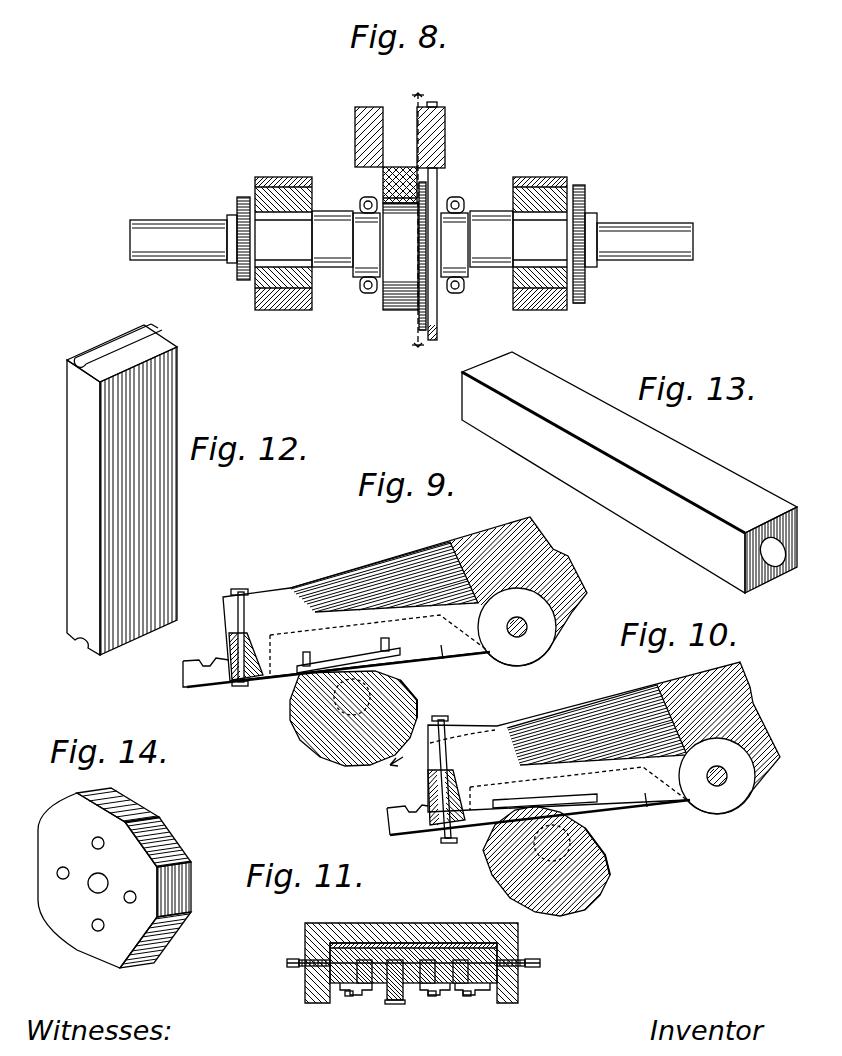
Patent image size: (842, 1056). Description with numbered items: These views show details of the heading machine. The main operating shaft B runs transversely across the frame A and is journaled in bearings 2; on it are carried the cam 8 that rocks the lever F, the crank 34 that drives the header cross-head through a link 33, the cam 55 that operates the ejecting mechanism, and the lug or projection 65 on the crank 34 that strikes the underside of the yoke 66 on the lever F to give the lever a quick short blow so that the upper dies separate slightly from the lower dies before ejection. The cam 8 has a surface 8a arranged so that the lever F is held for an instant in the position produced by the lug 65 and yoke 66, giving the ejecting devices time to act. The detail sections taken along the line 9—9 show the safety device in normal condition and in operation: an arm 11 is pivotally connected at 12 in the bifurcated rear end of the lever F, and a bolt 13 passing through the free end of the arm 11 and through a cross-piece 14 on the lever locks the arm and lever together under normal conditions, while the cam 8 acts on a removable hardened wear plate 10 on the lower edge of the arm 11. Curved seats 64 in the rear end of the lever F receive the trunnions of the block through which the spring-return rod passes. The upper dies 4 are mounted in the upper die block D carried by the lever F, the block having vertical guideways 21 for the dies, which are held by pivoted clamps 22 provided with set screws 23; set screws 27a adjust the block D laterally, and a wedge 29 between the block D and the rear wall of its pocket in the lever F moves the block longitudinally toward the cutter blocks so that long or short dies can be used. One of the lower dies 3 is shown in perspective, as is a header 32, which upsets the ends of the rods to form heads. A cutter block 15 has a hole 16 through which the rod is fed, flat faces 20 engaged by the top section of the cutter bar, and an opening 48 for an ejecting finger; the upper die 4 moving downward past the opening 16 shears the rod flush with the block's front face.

In FIG. 8, the bearings 2 is at (286, 192).
In FIG. 8, the frame A is at (289, 311).
In FIG. 8, the main operating shaft B is at (645, 250).
In FIG. 9, the main operating shaft B is at (332, 698).
In FIG. 10, the main operating shaft B is at (567, 836).
In FIG. 8, the lever F is at (445, 133).
In FIG. 9, the lever F is at (558, 562).
In FIG. 10, the lever F is at (757, 708).
In FIG. 11, the lever F is at (333, 929).
In FIG. 11, the upper die block D is at (458, 952).
In FIG. 12, the lower dies 3 is at (70, 455).
In FIG. 11, the upper dies 4 is at (398, 1005).
In FIG. 8, the cam 8 is at (387, 310).
In FIG. 9, the cam 8 is at (308, 735).
In FIG. 10, the cam 8 is at (503, 873).
In FIG. 9, the cam surface 8a is at (419, 699).
In FIG. 10, the cam surface 8a is at (600, 893).
In FIG. 8, the section line 9— 9 is at (419, 226).
In FIG. 8, the wear plate 10 is at (383, 198).
In FIG. 9, the wear plate 10 is at (350, 664).
In FIG. 10, the wear plate 10 is at (573, 800).
In FIG. 8, the arm 11 is at (383, 176).
In FIG. 9, the arm 11 is at (387, 602).
In FIG. 10, the arm 11 is at (585, 748).
In FIG. 9, the pivotal connection 12 is at (522, 630).
In FIG. 10, the pivotal connection 12 is at (722, 780).
In FIG. 9, the bolt 13 is at (239, 687).
In FIG. 10, the bolt 13 is at (446, 718).
In FIG. 8, the cross-piece 14 is at (585, 196).
In FIG. 9, the cross-piece 14 is at (230, 650).
In FIG. 10, the cross-piece 14 is at (428, 800).
In FIG. 14, the cutter block 15 is at (50, 827).
In FIG. 14, the hole or opening 16 is at (92, 890).
In FIG. 14, the flat faces 20 is at (123, 796).
In FIG. 11, the guideways 21 is at (352, 996).
In FIG. 11, the clamps 22 is at (476, 996).
In FIG. 11, the set screws 23 is at (431, 996).
In FIG. 11, the set screws 27a is at (287, 963).
In FIG. 11, the wedge 29 is at (403, 945).
In FIG. 13, the header 32 is at (588, 484).
In FIG. 8, the link 33 is at (365, 293).
In FIG. 8, the crank 34 is at (340, 262).
In FIG. 14, the openings 48 is at (96, 931).
In FIG. 8, the cam 55 is at (242, 274).
In FIG. 9, the curved seats or recesses 64 is at (183, 667).
In FIG. 10, the curved seats or recesses 64 is at (389, 820).
In FIG. 8, the lug or projection 65 is at (435, 240).
In FIG. 8, the yoke 66 is at (437, 335).